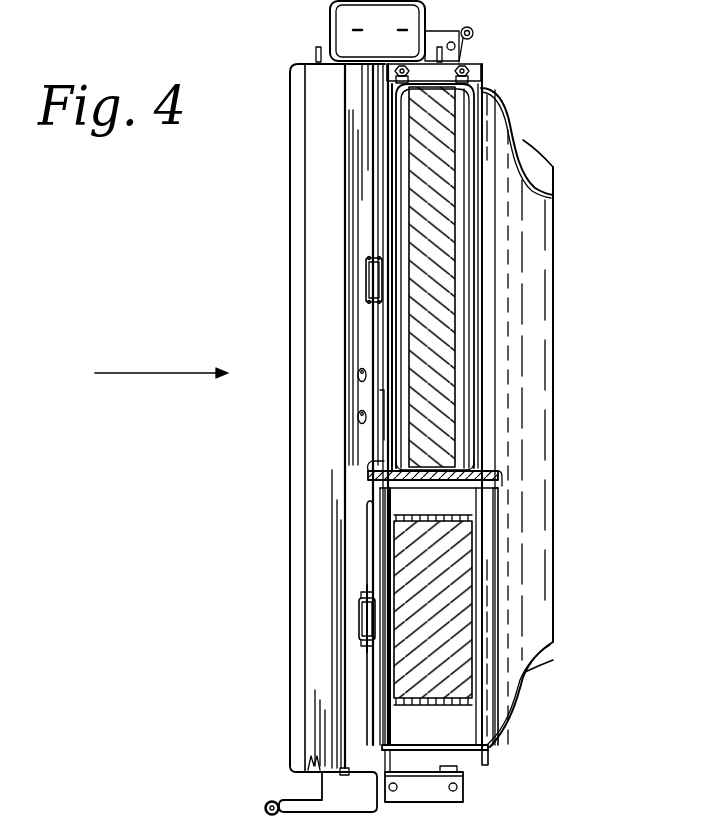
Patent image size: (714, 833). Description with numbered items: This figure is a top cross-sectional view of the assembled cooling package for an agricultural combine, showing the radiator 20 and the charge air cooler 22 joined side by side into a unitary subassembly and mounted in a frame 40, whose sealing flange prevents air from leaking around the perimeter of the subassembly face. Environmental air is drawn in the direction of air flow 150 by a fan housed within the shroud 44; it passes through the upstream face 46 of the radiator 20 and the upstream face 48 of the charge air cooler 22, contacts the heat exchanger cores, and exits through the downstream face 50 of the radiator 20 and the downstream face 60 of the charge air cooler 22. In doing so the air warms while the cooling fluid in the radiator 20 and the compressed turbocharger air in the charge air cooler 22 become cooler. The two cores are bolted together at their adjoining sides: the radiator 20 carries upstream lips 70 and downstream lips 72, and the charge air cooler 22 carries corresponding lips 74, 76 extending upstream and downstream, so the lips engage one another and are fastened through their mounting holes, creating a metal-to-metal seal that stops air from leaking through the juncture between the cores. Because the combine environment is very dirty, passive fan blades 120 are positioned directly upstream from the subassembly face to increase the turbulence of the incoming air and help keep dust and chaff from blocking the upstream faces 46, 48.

The radiator 20 is at (450, 230).
The charge air cooler 22 is at (450, 548).
The frame 40 is at (317, 82).
The shroud 44 is at (525, 140).
The upstream face 46 is at (393, 143).
The upstream face 48 is at (365, 667).
The downstream face 50 is at (482, 193).
The downstream face 60 is at (482, 606).
The upstream lips 70 is at (370, 470).
The downstream lips 72 is at (497, 472).
The lips 74 is at (368, 492).
The lips 76 is at (498, 490).
The passive fan blades 120 is at (375, 213).
The direction of air flow 150 is at (128, 374).